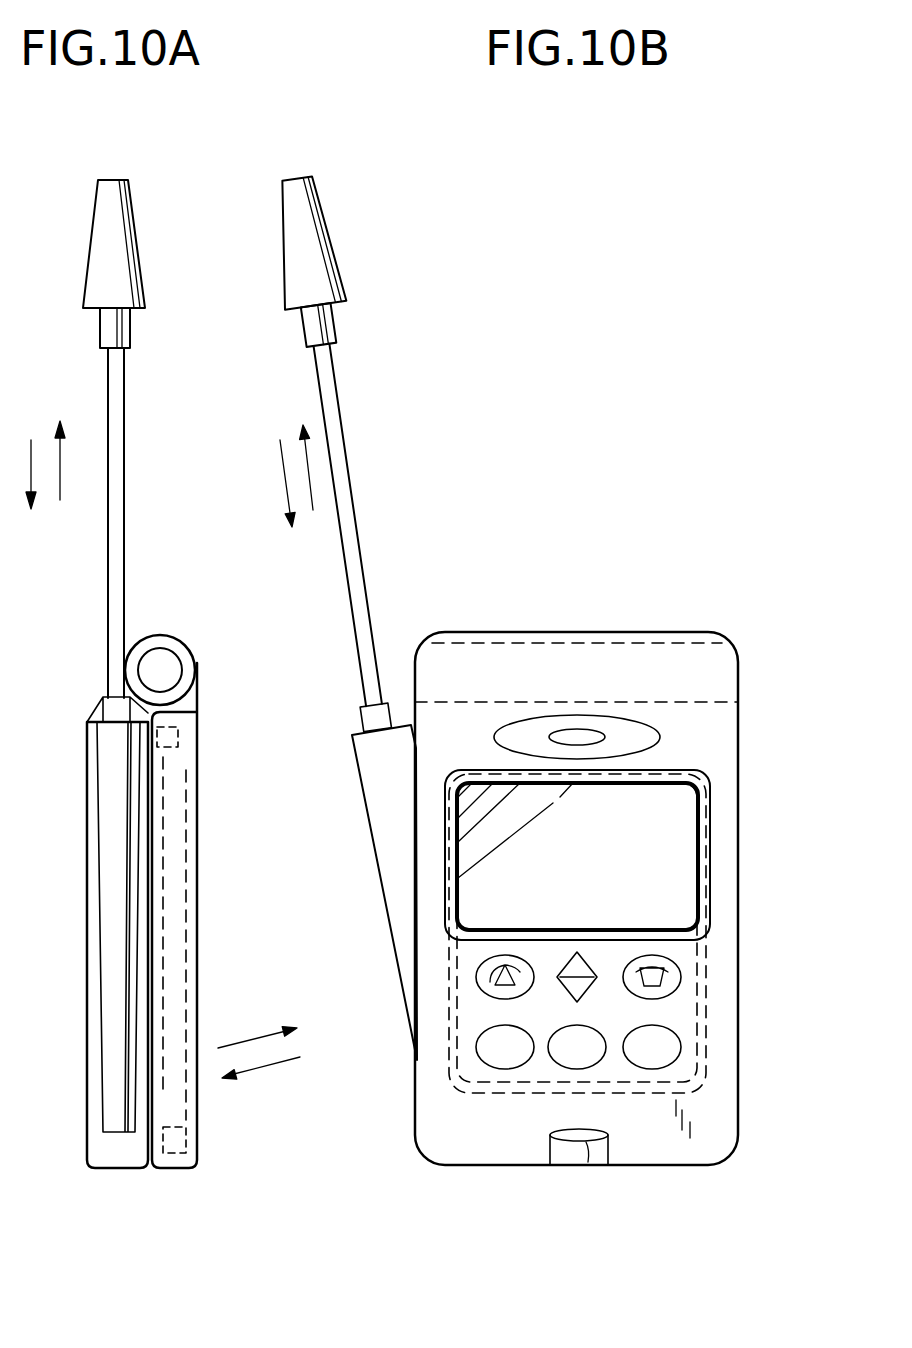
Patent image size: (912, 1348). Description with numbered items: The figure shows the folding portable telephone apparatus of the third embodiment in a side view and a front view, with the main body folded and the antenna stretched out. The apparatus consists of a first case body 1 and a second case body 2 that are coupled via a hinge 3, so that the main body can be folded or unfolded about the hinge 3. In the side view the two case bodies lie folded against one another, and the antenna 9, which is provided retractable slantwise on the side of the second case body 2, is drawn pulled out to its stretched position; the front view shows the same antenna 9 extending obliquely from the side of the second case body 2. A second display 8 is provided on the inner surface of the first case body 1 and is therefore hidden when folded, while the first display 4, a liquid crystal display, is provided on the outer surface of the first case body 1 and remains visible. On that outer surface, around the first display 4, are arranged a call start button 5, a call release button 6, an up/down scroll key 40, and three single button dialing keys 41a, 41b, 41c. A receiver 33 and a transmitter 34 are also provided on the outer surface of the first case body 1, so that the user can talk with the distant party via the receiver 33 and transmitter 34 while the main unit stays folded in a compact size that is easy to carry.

In FIG. 10A, the first case body 1 is at (190, 1103).
In FIG. 10B, the first case body 1 is at (576, 898).
In FIG. 10A, the second case body 2 is at (95, 1142).
In FIG. 10B, the second case body 2 is at (384, 892).
In FIG. 10A, the hinge 3 is at (170, 680).
In FIG. 10A, the first display 4 is at (195, 826).
In FIG. 10B, the first display 4 is at (665, 820).
In FIG. 10B, the call start button 5 is at (520, 955).
In FIG. 10B, the call release button 6 is at (672, 975).
In FIG. 10A, the second display 8 is at (163, 954).
In FIG. 10A, the antenna 9 is at (87, 258).
In FIG. 10B, the antenna 9 is at (330, 233).
In FIG. 10B, the receiver 33 is at (575, 737).
In FIG. 10B, the transmitter 34 is at (588, 1165).
In FIG. 10B, the up/down scroll key 40 is at (590, 957).
In FIG. 10B, the single button dialing key (T1) 41a is at (505, 1068).
In FIG. 10B, the single button dialing key (T2) 41b is at (600, 1047).
In FIG. 10B, the single button dialing key (T3) 41c is at (672, 1047).